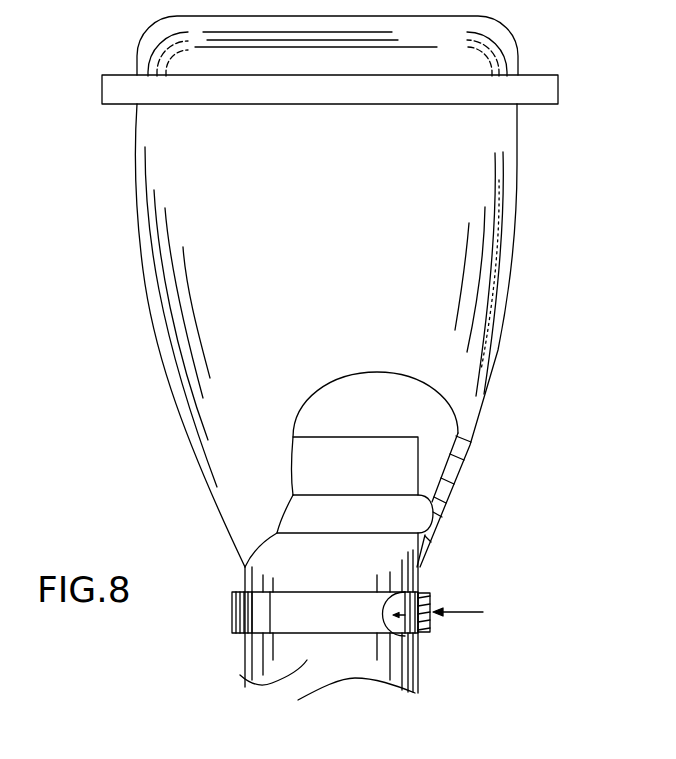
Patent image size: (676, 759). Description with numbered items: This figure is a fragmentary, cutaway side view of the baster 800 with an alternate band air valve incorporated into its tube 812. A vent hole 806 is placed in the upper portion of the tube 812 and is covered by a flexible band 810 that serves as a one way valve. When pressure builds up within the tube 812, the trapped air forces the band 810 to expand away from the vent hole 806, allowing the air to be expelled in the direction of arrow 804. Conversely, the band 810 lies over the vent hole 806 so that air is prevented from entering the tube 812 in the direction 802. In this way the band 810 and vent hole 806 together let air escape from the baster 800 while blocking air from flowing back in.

The baster 800 is at (467, 710).
The direction 802 is at (483, 612).
The arrow 804 is at (390, 618).
The vent hole 806 is at (431, 603).
The flexible band 810 is at (431, 626).
The tube 812 is at (240, 675).